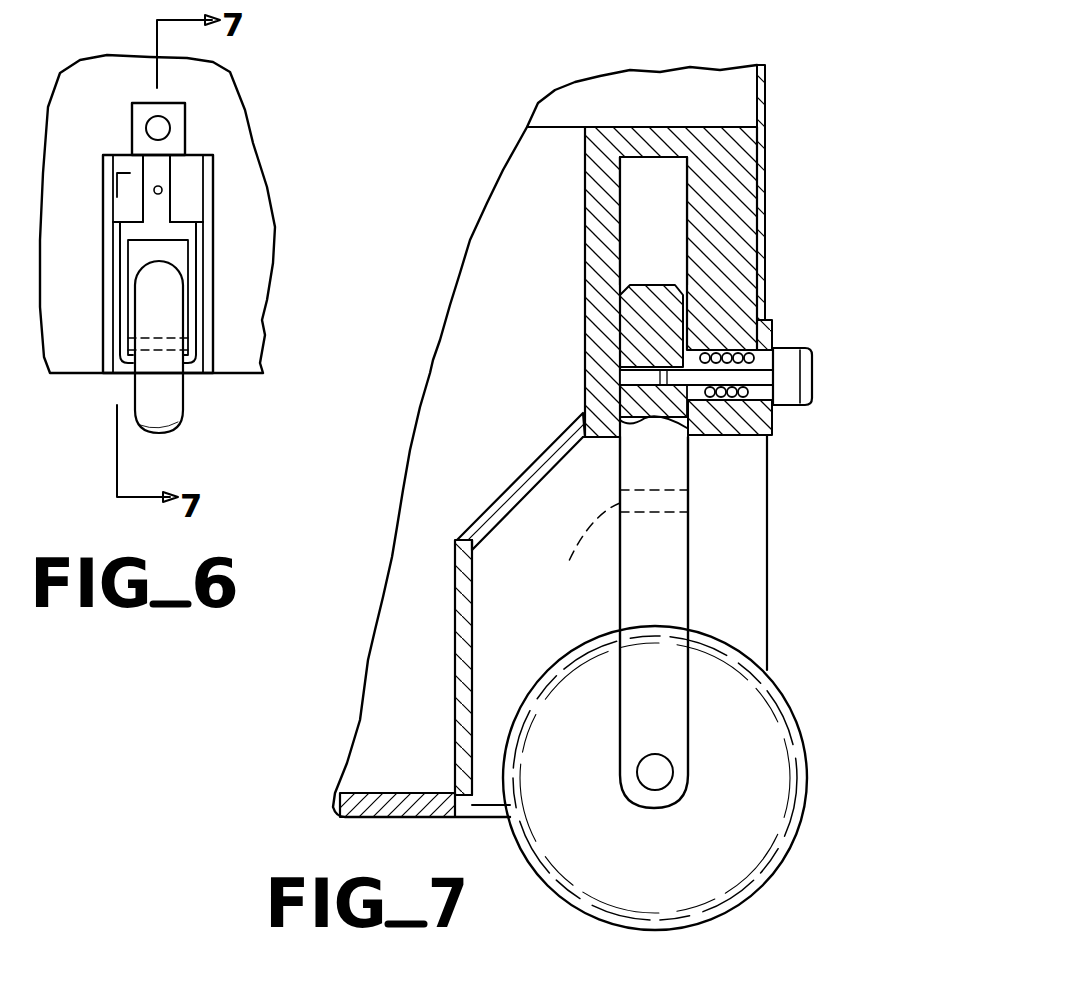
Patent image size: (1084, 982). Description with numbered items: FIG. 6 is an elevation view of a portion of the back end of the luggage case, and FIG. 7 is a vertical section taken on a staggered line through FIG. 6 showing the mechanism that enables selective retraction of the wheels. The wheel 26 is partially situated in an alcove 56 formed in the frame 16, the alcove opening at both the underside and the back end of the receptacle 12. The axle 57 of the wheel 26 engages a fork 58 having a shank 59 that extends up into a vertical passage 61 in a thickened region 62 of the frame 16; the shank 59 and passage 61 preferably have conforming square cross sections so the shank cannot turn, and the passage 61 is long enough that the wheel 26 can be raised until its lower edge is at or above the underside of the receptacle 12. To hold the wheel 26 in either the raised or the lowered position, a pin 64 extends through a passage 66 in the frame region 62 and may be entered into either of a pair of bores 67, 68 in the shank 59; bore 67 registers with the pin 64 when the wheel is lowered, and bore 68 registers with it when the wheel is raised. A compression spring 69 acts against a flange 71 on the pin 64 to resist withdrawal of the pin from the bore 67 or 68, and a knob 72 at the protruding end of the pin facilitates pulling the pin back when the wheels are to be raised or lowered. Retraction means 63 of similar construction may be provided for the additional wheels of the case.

In FIG. 6, the receptacle 12 is at (270, 265).
In FIG. 7, the receptacle 12 is at (766, 110).
In FIG. 7, the frame 16 is at (558, 127).
In FIG. 6, the wheel 26 is at (185, 410).
In FIG. 7, the wheel 26 is at (652, 868).
In FIG. 6, the alcove 56 is at (213, 178).
In FIG. 7, the alcove 56 is at (462, 672).
In FIG. 7, the axle 57 is at (665, 782).
In FIG. 6, the fork 58 is at (205, 241).
In FIG. 7, the fork 58 is at (722, 572).
In FIG. 6, the shank 59 is at (170, 178).
In FIG. 7, the shank 59 is at (622, 460).
In FIG. 7, the vertical passage 61 is at (632, 205).
In FIG. 7, the thickened region 62 is at (585, 268).
In FIG. 7, the retraction means 63 is at (588, 375).
In FIG. 7, the pin 64 is at (728, 390).
In FIG. 7, the passage 66 is at (718, 350).
In FIG. 7, the bore 67 is at (643, 367).
In FIG. 7, the bore 68 is at (584, 552).
In FIG. 7, the compression spring 69 is at (772, 422).
In FIG. 7, the flange 71 is at (695, 437).
In FIG. 6, the knob 72 is at (146, 127).
In FIG. 7, the knob 72 is at (792, 348).